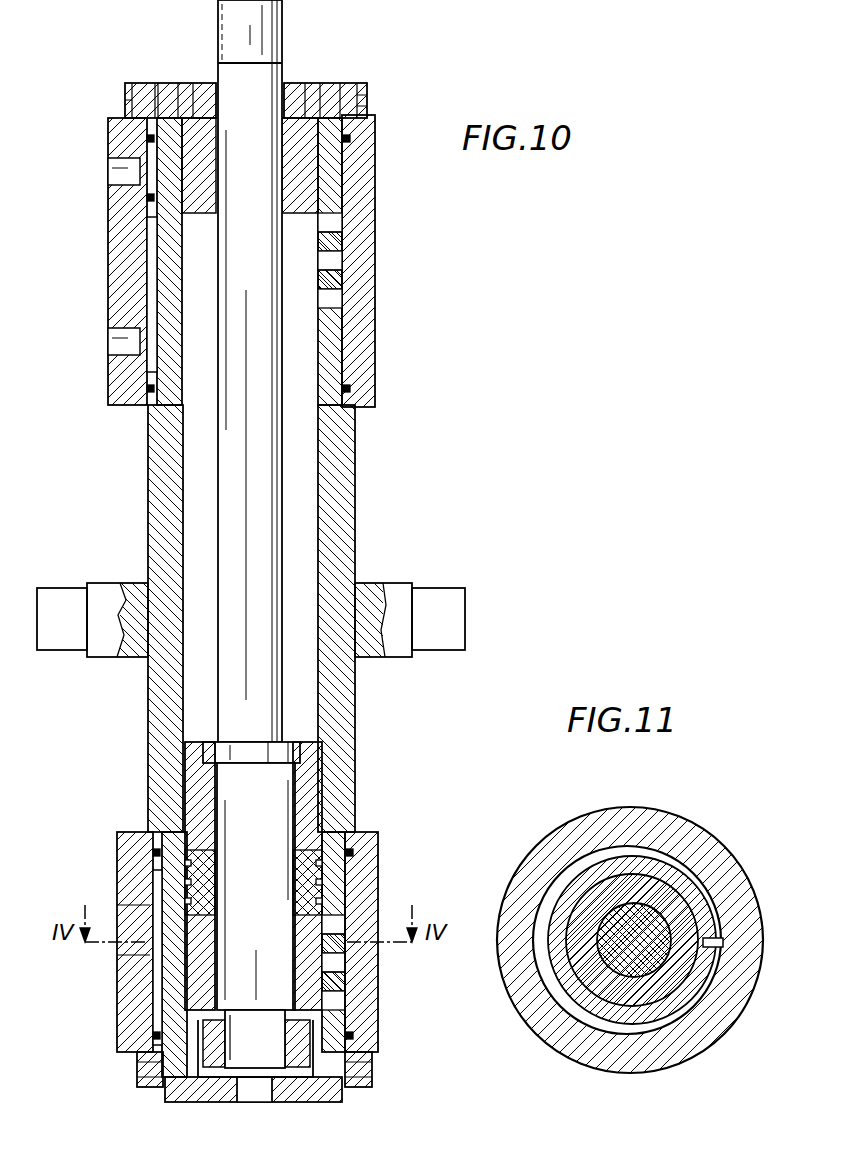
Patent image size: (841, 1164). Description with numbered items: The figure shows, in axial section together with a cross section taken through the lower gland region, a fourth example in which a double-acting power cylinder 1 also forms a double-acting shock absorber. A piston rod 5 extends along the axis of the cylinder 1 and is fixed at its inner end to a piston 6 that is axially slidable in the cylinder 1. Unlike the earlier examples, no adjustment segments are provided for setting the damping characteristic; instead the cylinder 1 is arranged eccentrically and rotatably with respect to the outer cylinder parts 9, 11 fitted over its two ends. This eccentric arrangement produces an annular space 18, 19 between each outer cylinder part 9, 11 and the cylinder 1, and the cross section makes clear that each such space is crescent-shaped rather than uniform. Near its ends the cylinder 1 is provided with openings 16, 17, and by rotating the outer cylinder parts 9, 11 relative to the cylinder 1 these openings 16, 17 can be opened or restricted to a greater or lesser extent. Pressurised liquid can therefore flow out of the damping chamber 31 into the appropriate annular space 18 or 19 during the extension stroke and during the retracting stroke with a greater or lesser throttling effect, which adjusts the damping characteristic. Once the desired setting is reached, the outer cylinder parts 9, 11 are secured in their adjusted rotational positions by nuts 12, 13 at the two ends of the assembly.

In FIG. 10, the power cylinder 1 is at (345, 528).
In FIG. 11, the power cylinder 1 is at (672, 862).
In FIG. 10, the piston rod 5 is at (258, 23).
In FIG. 10, the piston 6 is at (340, 915).
In FIG. 11, the piston 6 is at (608, 985).
In FIG. 10, the outer cylinder part 9 is at (367, 1022).
In FIG. 11, the outer cylinder part 9 is at (588, 825).
In FIG. 10, the outer cylinder part 11 is at (358, 317).
In FIG. 10, the nut 12 is at (372, 1080).
In FIG. 10, the nut 13 is at (360, 105).
In FIG. 10, the openings 16 is at (340, 1000).
In FIG. 11, the openings 16 is at (710, 950).
In FIG. 10, the openings 17 is at (340, 273).
In FIG. 10, the annular space 18 is at (148, 968).
In FIG. 11, the annular space 18 is at (558, 872).
In FIG. 10, the annular space 19 is at (147, 288).
In FIG. 10, the damping chamber 31 is at (308, 443).